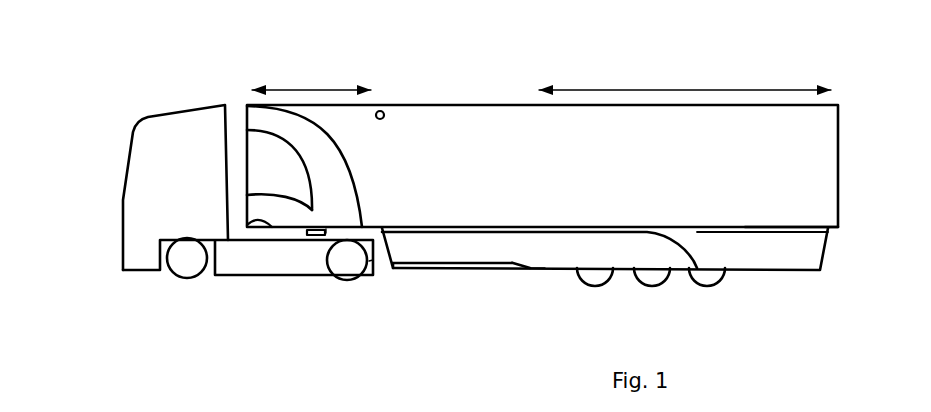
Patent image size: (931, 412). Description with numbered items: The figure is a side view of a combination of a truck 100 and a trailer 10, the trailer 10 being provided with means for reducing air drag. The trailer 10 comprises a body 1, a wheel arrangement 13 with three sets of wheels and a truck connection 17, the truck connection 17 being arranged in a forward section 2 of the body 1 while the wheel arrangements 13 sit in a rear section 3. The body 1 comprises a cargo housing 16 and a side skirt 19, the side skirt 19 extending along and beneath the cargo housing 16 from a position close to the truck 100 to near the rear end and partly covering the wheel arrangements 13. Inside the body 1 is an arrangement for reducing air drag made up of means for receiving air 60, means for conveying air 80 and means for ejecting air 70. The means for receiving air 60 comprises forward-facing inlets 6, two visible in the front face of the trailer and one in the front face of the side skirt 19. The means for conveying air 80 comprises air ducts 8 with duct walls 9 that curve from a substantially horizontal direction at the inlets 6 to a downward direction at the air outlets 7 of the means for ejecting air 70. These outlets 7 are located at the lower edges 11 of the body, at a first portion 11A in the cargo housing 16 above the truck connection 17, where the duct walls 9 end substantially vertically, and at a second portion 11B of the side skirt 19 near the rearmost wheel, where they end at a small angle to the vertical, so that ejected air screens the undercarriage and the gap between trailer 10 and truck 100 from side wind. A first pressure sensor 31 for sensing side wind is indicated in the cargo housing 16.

The body 1 is at (589, 155).
The forward section 2 is at (311, 77).
The rear section 3 is at (685, 76).
The inlets 6 is at (248, 128).
The air outlets 7 is at (312, 226).
The air ducts 8 is at (283, 153).
The duct walls 9 is at (353, 168).
The trailer 10 is at (490, 78).
The lower edges 11 is at (512, 262).
The first portion of the lower edge 11A is at (275, 228).
The second portion of the lower edge 11B is at (537, 269).
The wheel arrangement 13 is at (626, 298).
The cargo housing 16 is at (784, 225).
The truck connection 17 is at (326, 233).
The side skirt 19 is at (767, 259).
The first pressure sensor 31 is at (383, 119).
The means for receiving air 60 is at (370, 260).
The means for ejecting air 70 is at (569, 278).
The means for conveying air 80 is at (431, 243).
The truck 100 is at (174, 120).